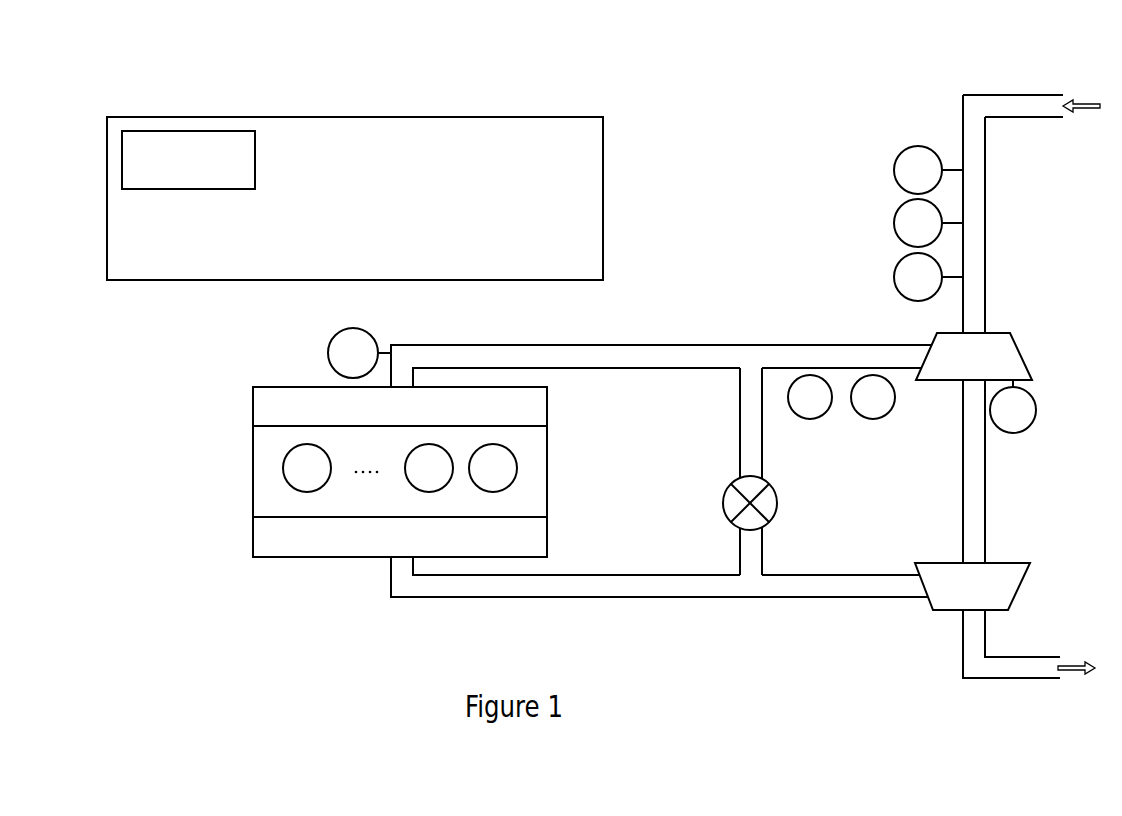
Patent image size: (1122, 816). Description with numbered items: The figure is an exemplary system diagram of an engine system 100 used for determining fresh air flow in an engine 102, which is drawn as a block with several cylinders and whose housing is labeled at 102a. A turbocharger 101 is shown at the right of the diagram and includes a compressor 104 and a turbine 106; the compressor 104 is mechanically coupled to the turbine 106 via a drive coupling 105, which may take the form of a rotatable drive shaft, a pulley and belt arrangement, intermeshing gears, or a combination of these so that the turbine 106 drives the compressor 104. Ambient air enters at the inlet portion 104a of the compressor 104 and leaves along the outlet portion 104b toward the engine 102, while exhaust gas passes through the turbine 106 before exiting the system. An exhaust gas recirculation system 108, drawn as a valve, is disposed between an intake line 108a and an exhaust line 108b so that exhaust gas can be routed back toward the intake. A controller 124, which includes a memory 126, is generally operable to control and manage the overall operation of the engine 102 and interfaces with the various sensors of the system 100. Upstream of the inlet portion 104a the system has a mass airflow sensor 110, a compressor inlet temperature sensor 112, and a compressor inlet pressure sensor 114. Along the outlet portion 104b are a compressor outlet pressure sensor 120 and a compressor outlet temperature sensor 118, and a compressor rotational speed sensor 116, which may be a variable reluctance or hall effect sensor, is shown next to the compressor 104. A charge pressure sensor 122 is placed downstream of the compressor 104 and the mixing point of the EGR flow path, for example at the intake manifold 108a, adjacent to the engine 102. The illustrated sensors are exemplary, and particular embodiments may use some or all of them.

The engine system 100 is at (104, 92).
The turbocharger 101 is at (1012, 485).
The engine 102 is at (548, 483).
The engine block housing 102a is at (310, 387).
The compressor 104 is at (1020, 350).
The inlet portion 104a is at (998, 333).
The outlet portion 104b is at (930, 345).
The drive coupling 105 is at (962, 472).
The turbine 106 is at (1022, 593).
The exhaust gas recirculation (EGR) system 108 is at (728, 490).
The intake line 108a is at (540, 345).
The exhaust line 108b is at (556, 597).
The mass airflow (MAF) sensor 110 is at (928, 170).
The compressor inlet temperature sensor 112 is at (928, 223).
The compressor inlet pressure sensor 114 is at (928, 277).
The compressor rotational speed sensor 116 is at (1013, 406).
The compressor outlet temperature sensor 118 is at (873, 397).
The compressor outlet pressure sensor 120 is at (810, 397).
The charge pressure sensor 122 is at (359, 353).
The controller 124 is at (367, 249).
The memory 126 is at (256, 152).